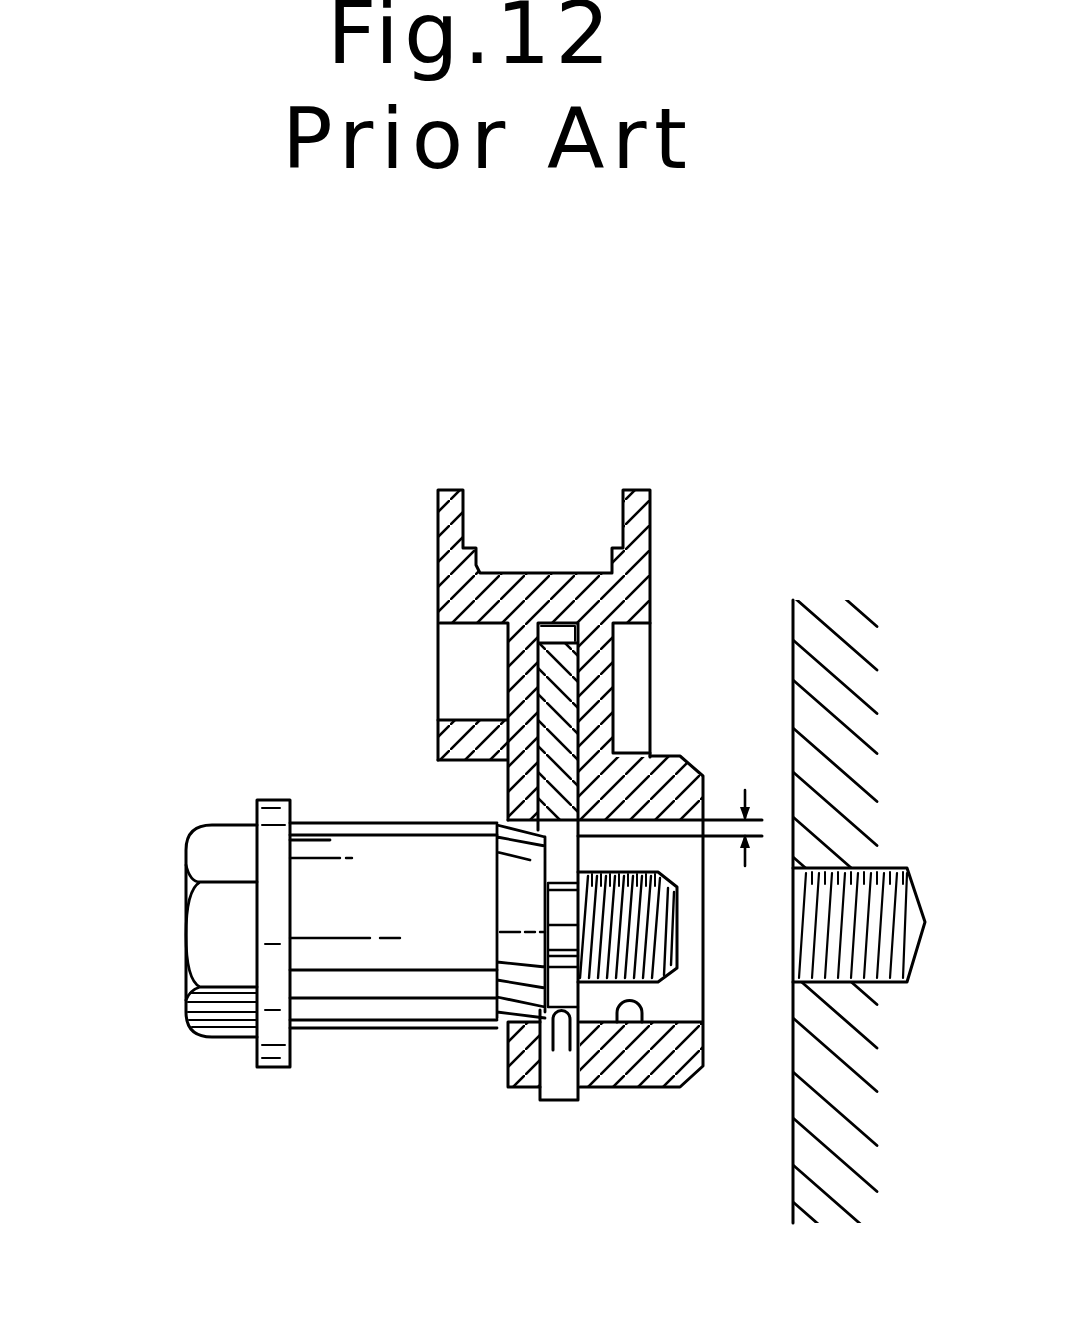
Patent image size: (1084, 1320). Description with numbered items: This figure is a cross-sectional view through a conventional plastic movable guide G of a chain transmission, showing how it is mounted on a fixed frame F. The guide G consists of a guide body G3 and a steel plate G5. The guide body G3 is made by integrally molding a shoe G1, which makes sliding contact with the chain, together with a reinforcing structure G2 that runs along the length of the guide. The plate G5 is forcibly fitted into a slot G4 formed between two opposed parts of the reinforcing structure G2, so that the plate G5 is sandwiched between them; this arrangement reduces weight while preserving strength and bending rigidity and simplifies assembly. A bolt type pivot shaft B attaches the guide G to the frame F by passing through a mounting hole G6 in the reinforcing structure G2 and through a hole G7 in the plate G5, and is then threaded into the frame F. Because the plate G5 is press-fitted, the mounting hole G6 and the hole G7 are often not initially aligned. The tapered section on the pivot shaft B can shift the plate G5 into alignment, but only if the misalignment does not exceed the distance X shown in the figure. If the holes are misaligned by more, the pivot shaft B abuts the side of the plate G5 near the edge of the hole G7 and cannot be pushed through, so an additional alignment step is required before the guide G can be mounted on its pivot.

The movable guide G is at (688, 492).
The shoe G1 is at (513, 553).
The reinforcing structure G2 is at (513, 795).
The guide body G3 is at (320, 408).
The slot G4 is at (551, 628).
The plate G5 is at (567, 690).
The mounting hole G6 is at (631, 1010).
The hole G7 is at (568, 1025).
The bolt type pivot shaft B is at (150, 918).
The frame F is at (920, 1107).
The distance X is at (749, 801).